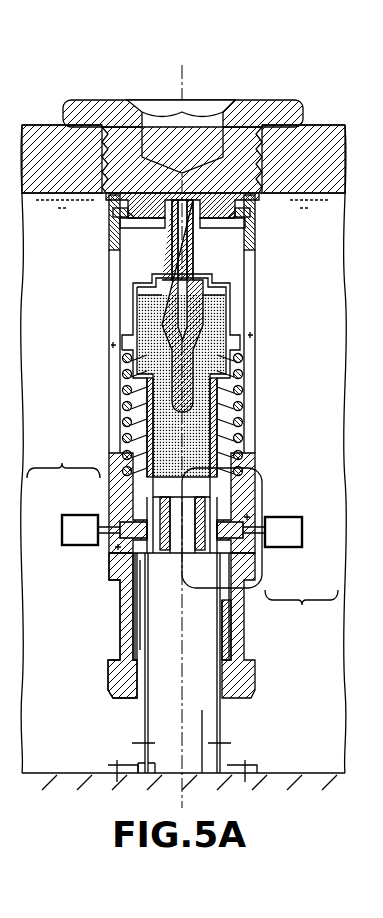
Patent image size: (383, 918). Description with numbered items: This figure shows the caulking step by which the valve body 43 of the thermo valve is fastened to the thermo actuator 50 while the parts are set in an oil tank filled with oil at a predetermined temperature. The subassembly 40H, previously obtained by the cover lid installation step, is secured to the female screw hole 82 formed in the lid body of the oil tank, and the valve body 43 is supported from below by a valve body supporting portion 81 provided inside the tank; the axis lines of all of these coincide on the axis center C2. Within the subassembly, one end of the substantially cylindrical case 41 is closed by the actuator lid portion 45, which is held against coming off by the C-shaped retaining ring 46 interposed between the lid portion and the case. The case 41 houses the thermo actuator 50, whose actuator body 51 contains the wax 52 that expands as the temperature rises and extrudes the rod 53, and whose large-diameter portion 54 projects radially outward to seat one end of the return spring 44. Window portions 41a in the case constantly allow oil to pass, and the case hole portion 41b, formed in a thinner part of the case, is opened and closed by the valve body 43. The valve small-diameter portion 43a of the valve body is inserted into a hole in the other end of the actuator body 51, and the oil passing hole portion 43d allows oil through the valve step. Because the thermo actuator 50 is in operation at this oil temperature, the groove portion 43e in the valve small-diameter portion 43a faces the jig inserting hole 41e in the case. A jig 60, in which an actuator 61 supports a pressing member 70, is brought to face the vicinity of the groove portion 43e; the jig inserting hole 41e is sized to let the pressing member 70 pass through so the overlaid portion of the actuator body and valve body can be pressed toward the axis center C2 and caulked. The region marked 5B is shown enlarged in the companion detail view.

The subassembly 40H is at (74, 77).
The axis center C2 is at (178, 91).
The actuator lid portion 45 is at (300, 112).
The female screw hole 82 is at (250, 150).
The C-shaped retaining ring 46 is at (251, 213).
The case 41 is at (108, 273).
The rod 53 is at (177, 263).
The wax 52 is at (203, 353).
The thermo actuator 50 is at (133, 303).
The large-diameter portion 54 is at (232, 327).
The window portions 41a is at (112, 345).
The actuator body 51 is at (123, 410).
The return spring 44 is at (242, 410).
The valve small-diameter portion 43a is at (165, 492).
The valve body 43 is at (130, 605).
The oil passing hole portion 43d is at (150, 575).
The groove portion 43e is at (213, 517).
The jig inserting hole 41e is at (117, 547).
The jig 60 is at (182, 534).
The actuator 61 is at (62, 530).
The pressing member 70 is at (130, 522).
The case hole portion 41b is at (237, 628).
The valve body supporting portion 81 is at (148, 713).
The detail view 5B is at (196, 592).